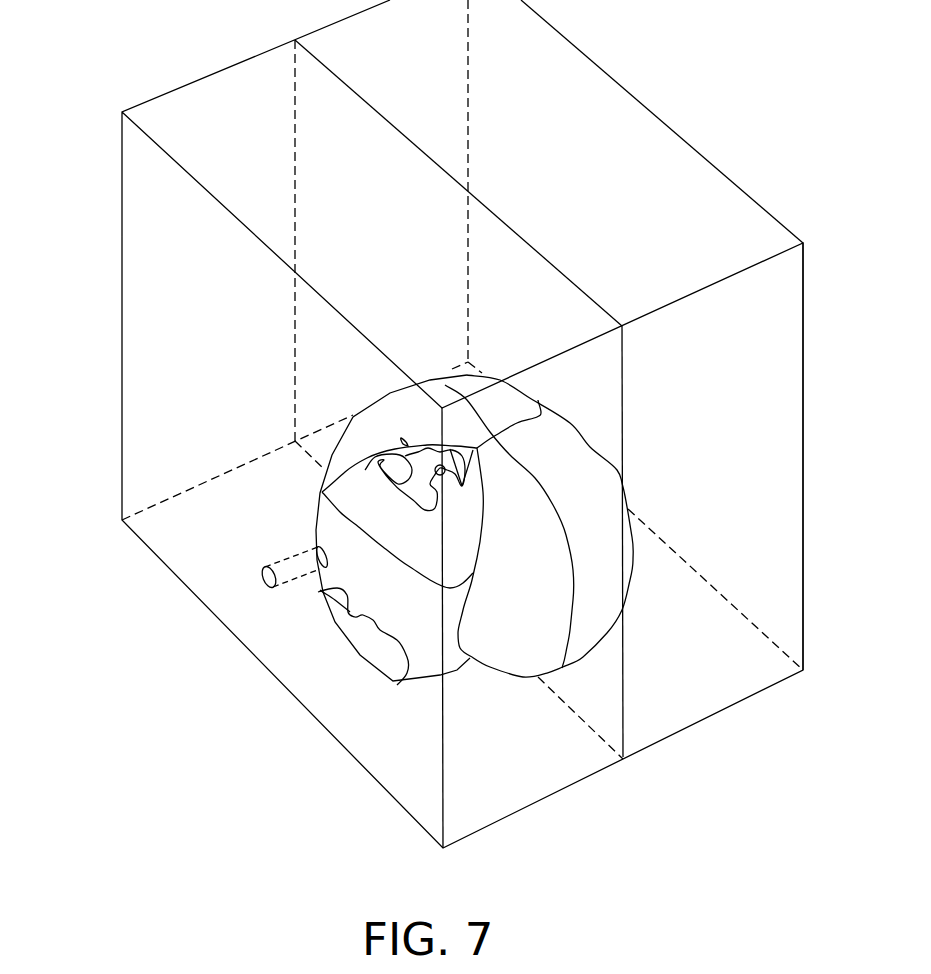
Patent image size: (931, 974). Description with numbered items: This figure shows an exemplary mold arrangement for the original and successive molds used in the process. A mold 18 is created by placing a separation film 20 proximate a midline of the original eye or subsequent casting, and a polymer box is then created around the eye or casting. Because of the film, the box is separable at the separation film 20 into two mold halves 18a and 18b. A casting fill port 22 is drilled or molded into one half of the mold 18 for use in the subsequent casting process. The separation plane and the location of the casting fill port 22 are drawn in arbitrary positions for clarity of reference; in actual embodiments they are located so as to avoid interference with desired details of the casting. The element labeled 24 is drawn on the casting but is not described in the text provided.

The mold 18 is at (106, 187).
The mold half 18a is at (415, 735).
The mold half 18b is at (750, 515).
The separation film 20 is at (597, 687).
The casting fill port 22 is at (260, 586).
The cap segment 24 is at (587, 483).